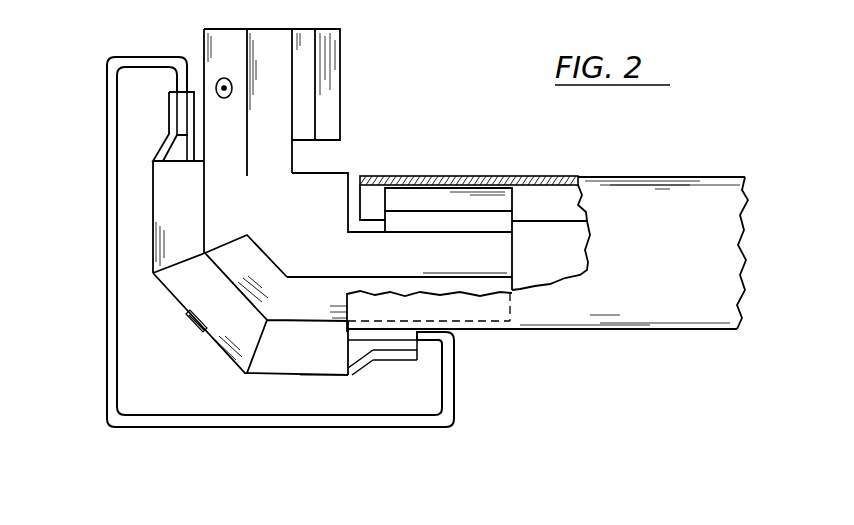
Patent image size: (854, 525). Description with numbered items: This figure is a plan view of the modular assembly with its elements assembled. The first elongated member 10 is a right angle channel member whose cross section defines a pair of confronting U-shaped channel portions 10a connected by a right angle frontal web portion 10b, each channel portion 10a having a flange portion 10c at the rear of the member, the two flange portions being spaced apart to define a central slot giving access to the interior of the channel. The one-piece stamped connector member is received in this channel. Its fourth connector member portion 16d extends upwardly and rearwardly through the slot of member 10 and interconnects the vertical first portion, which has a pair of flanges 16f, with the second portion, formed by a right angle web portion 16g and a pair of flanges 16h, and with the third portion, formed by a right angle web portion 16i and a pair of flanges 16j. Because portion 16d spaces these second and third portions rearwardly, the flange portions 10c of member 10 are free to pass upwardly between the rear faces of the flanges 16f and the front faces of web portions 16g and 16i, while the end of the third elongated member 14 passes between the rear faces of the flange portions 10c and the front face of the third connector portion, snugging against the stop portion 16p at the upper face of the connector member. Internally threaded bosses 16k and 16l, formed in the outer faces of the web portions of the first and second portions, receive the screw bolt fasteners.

The first elongated member 10 is at (287, 248).
The U-shaped channel portion 10a is at (147, 74).
The right angle frontal web portion 10b is at (106, 300).
The flange portion 10c is at (188, 78).
The third elongated member 14 is at (684, 174).
The fourth connector member portion 16d is at (196, 203).
The flange 16f is at (402, 361).
The right angle web portion 16g is at (288, 147).
The flange 16h is at (341, 82).
The right angle web portion 16i is at (450, 264).
The flange 16j is at (466, 205).
The internally threaded boss 16k is at (190, 322).
The internally threaded boss 16l is at (229, 97).
The stop portion 16p is at (334, 216).